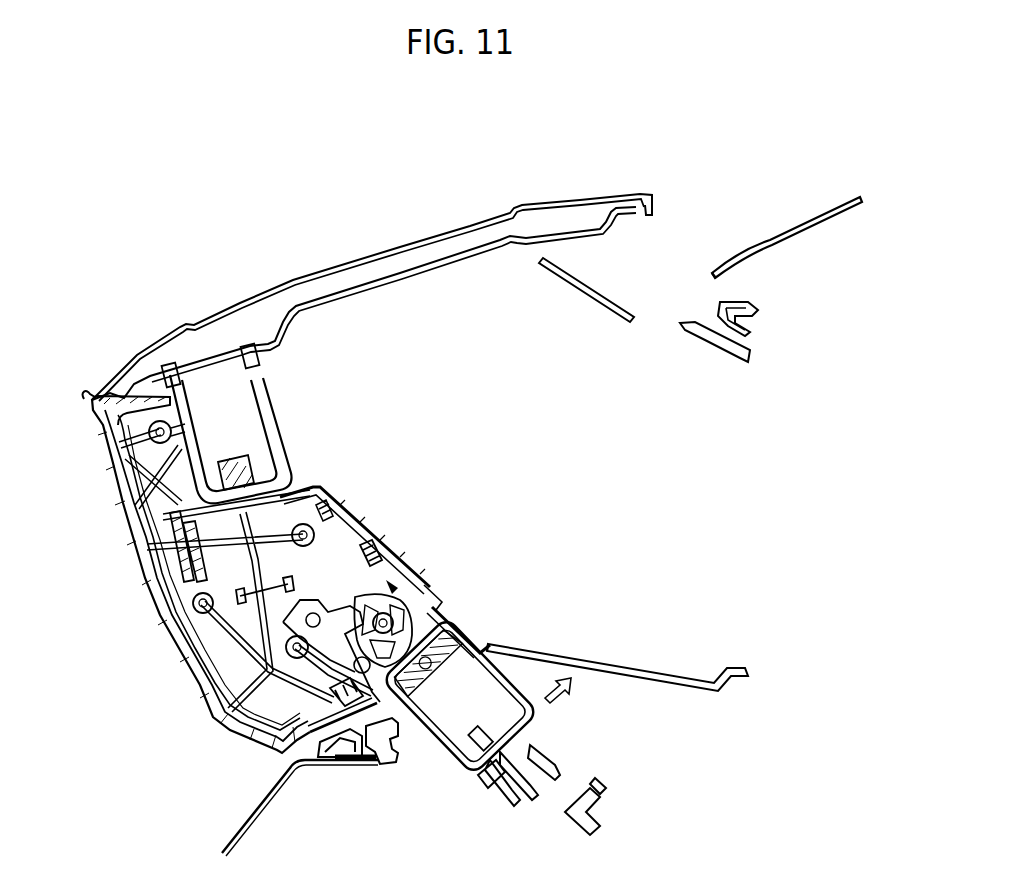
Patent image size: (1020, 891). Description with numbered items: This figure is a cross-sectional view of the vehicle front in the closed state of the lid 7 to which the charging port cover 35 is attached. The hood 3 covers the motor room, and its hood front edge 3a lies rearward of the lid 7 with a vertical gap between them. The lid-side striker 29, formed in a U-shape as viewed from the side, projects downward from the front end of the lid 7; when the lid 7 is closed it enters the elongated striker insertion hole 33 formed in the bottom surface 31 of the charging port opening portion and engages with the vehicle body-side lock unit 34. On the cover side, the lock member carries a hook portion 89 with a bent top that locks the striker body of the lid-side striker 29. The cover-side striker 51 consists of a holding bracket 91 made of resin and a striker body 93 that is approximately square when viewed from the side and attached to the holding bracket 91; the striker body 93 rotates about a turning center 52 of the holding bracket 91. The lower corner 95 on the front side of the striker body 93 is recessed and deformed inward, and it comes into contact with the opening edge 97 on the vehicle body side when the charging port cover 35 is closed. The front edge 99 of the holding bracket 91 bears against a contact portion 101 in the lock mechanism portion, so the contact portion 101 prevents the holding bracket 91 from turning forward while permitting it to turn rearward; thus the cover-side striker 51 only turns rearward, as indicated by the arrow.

The hood 3 is at (780, 232).
The hood front edge 3a is at (712, 275).
The lid 7 is at (346, 253).
The lid-side striker 29 is at (272, 393).
The bottom surface 31 is at (648, 670).
The striker insertion hole 33 is at (491, 644).
The vehicle body-side lock unit 34 is at (540, 752).
The charging port cover 35 is at (130, 592).
The cover-side striker 51 is at (441, 604).
The turning center 52 is at (394, 588).
The hook portion 89 is at (250, 460).
The holding bracket 91 is at (462, 612).
The striker body 93 is at (436, 735).
The lower corner 95 is at (490, 775).
The opening edge 97 is at (280, 742).
The front edge 99 is at (383, 763).
The contact portion 101 is at (340, 678).